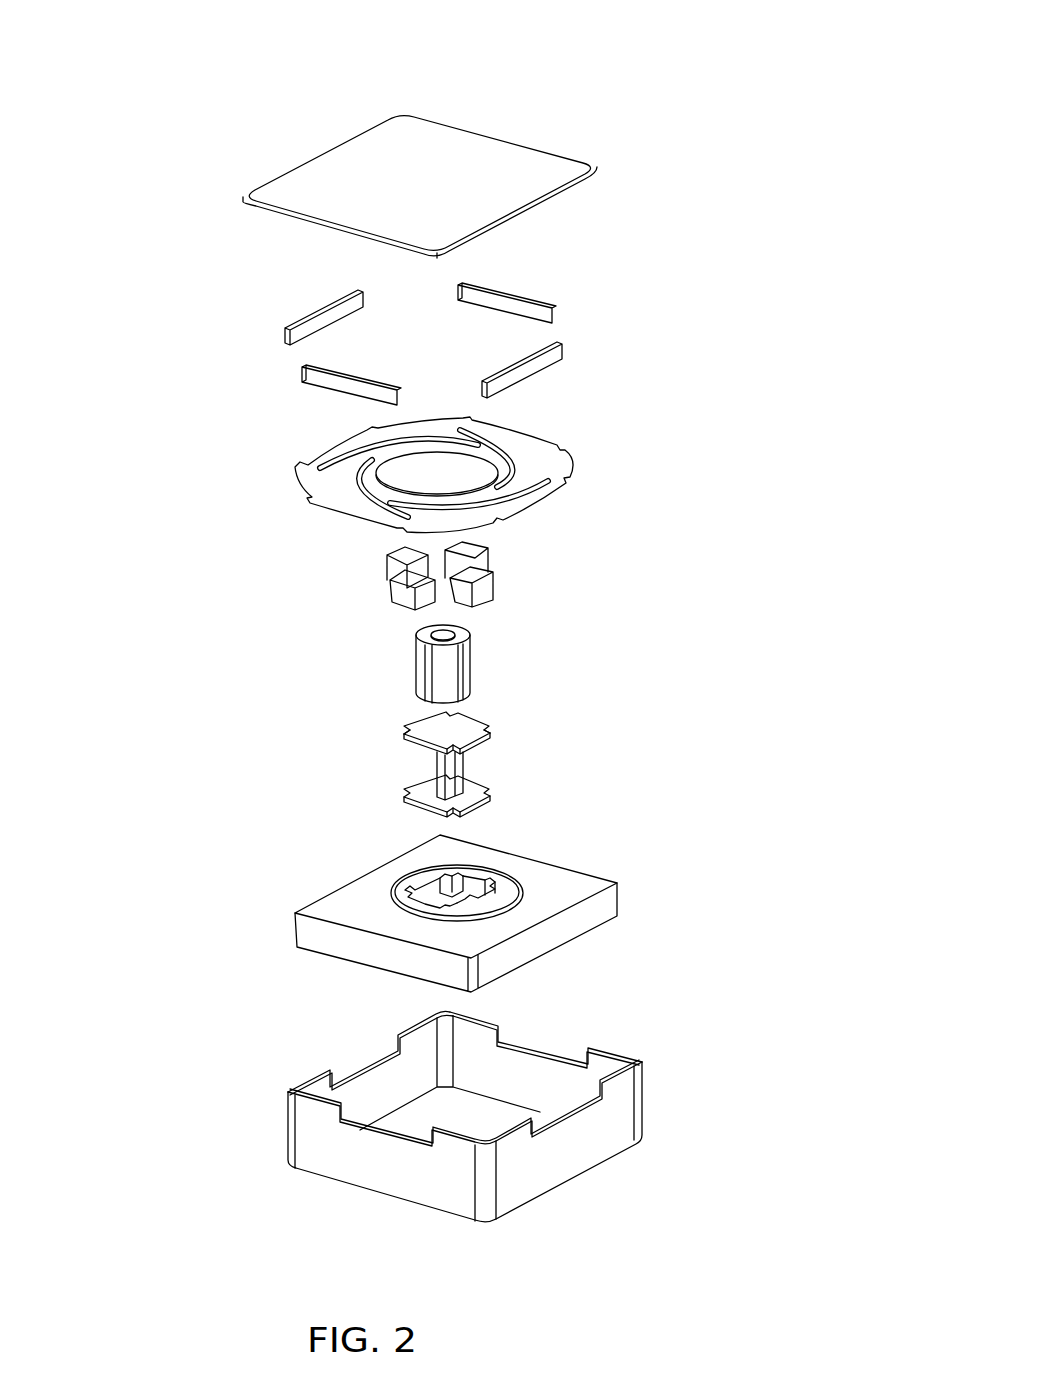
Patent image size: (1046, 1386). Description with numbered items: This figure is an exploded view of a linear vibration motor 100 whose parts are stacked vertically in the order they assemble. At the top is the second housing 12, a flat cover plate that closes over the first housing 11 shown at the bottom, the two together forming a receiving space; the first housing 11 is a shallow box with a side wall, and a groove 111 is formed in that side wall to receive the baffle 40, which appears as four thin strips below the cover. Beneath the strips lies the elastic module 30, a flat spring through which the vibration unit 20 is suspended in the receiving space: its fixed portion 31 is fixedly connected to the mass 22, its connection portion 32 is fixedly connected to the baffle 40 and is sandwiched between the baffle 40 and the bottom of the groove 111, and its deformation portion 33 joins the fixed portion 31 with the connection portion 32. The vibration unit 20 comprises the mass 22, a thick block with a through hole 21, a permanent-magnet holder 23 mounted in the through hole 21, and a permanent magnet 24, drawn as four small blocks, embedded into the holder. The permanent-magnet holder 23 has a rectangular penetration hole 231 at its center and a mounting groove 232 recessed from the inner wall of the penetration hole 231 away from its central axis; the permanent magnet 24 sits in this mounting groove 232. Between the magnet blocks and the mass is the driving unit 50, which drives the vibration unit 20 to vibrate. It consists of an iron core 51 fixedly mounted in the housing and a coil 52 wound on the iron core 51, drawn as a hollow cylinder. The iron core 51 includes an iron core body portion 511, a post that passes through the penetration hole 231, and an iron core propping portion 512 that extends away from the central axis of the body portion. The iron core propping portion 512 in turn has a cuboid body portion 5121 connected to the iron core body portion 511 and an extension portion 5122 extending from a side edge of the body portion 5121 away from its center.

The linear vibration motor 100 is at (462, 34).
The first housing 11 is at (503, 1112).
The groove 111 is at (573, 1042).
The second housing 12 is at (510, 190).
The vibration unit 20 is at (532, 767).
The through hole 21 is at (487, 902).
The mass 22 is at (577, 893).
The permanent-magnet holder 23 is at (549, 844).
The penetration hole 231 is at (458, 880).
The mounting groove 232 is at (490, 877).
The permanent magnet 24 is at (485, 598).
The elastic module 30 is at (481, 475).
The fixed portion 31 is at (500, 465).
The connection portion 32 is at (563, 483).
The deformation portion 33 is at (477, 512).
The baffle 40 is at (545, 355).
The driving unit 50 is at (321, 717).
The iron core 51 is at (348, 749).
The iron core body portion 511 is at (443, 771).
The iron core propping portion 512 is at (371, 719).
The body portion 5121 is at (426, 730).
The extension portion 5122 is at (408, 740).
The coil 52 is at (440, 656).